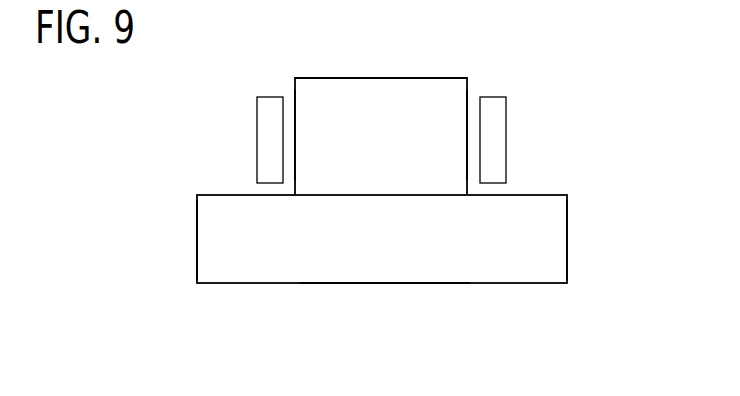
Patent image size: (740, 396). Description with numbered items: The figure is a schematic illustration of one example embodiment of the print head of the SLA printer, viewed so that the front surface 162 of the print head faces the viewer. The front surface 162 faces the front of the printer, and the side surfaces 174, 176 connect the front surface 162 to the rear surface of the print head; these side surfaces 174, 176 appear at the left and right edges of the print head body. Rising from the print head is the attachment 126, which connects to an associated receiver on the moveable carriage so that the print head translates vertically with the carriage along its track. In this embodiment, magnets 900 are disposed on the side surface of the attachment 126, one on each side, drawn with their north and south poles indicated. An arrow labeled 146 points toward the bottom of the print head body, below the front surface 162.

The attachment 126 is at (383, 78).
The front surface 162 is at (398, 250).
The magnets 900 is at (257, 107).
The side surface 174 is at (295, 85).
The side surface 176 is at (467, 86).
The bottom surface 146 is at (383, 283).